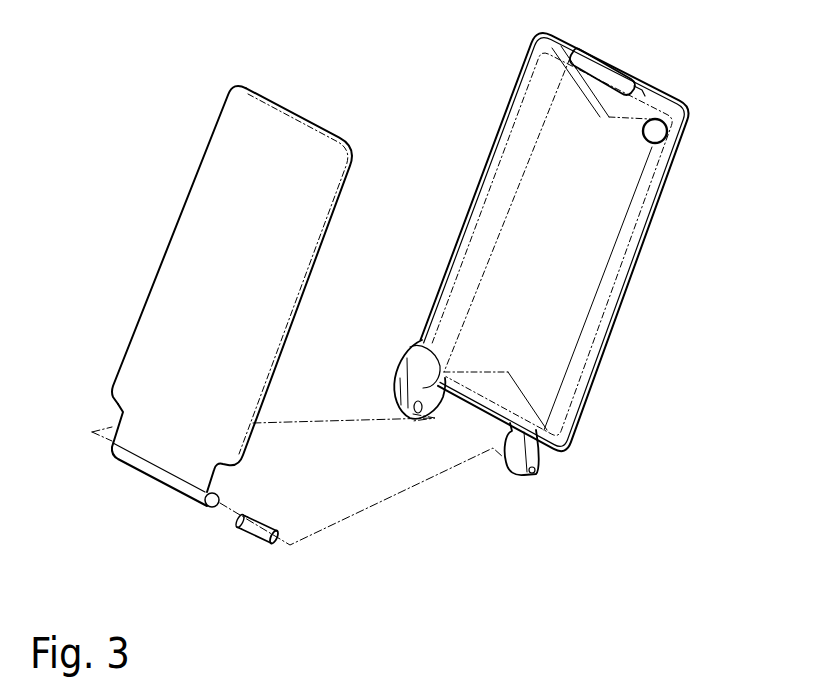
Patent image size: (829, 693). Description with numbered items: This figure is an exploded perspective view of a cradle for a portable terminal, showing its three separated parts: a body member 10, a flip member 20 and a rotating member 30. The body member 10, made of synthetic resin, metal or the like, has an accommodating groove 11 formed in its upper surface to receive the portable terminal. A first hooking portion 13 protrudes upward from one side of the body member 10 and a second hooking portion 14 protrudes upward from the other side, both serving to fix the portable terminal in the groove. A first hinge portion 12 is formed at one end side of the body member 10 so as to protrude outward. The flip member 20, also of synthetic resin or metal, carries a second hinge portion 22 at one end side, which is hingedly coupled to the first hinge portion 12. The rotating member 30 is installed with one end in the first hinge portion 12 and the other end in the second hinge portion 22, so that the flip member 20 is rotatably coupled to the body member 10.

The body member 10 is at (646, 238).
The accommodating groove 11 is at (573, 272).
The first hinge portion 12 is at (533, 457).
The first hooking portion 13 is at (600, 67).
The second hooking portion 14 is at (413, 353).
The flip member 20 is at (190, 262).
The second hinge portion 22 is at (157, 477).
The rotating member 30 is at (258, 528).